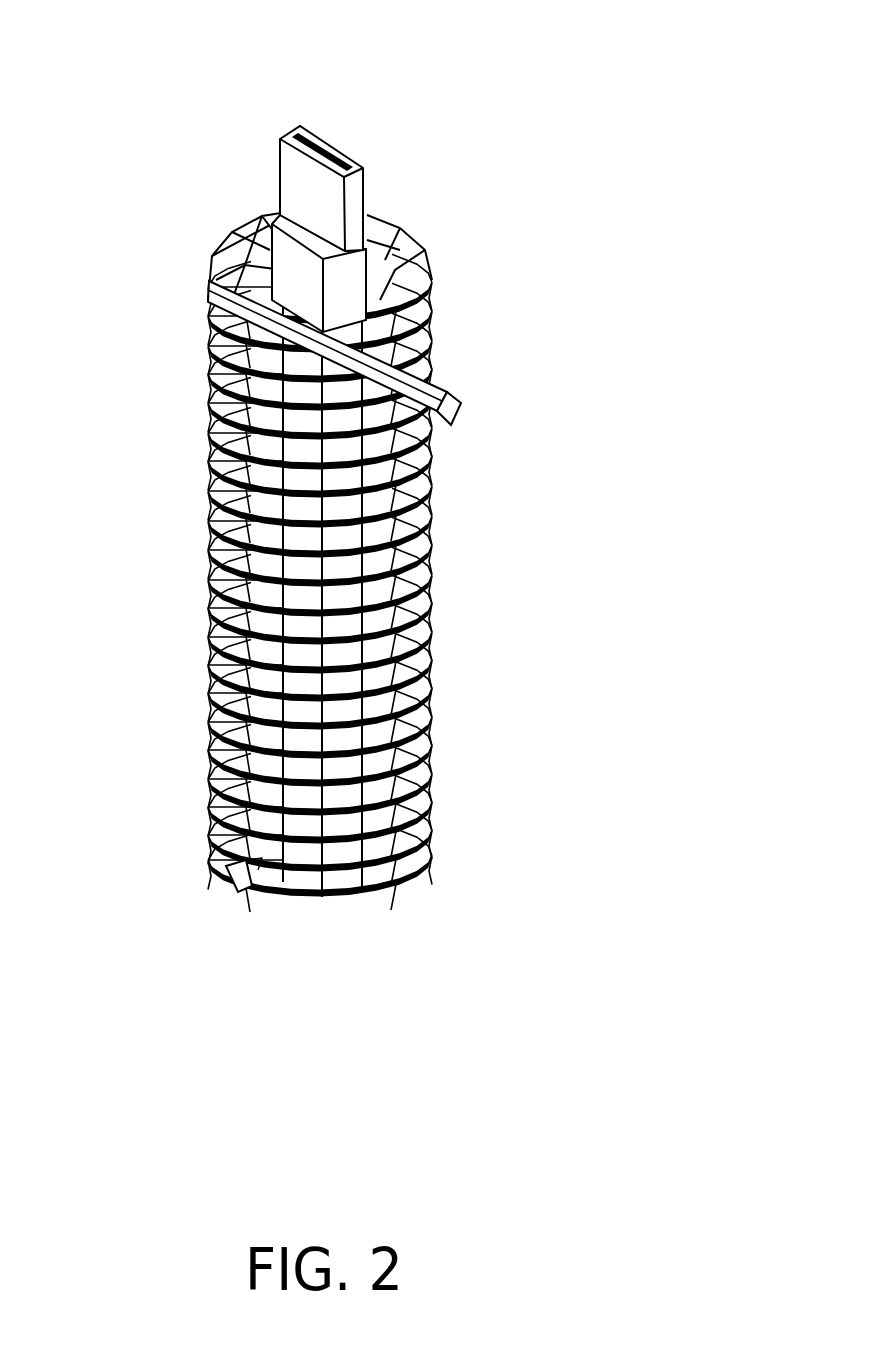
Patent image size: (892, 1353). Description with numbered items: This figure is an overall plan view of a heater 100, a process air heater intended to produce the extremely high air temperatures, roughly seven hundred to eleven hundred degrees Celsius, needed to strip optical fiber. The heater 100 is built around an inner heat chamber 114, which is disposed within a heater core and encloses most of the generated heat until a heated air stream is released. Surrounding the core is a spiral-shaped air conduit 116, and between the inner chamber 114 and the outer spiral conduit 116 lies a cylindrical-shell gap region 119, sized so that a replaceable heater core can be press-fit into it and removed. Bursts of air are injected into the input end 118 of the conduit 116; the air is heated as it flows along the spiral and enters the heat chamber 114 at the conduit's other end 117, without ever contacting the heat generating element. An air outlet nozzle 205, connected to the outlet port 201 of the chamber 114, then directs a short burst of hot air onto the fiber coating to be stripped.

The heater 100 is at (404, 498).
The inner heat chamber 114 is at (340, 292).
The air conduit 116 is at (218, 522).
The end of the conduit 117 is at (238, 892).
The input end 118 is at (466, 388).
The gap region 119 is at (262, 250).
The outlet port 201 is at (423, 128).
The air outlet nozzle 205 is at (317, 125).